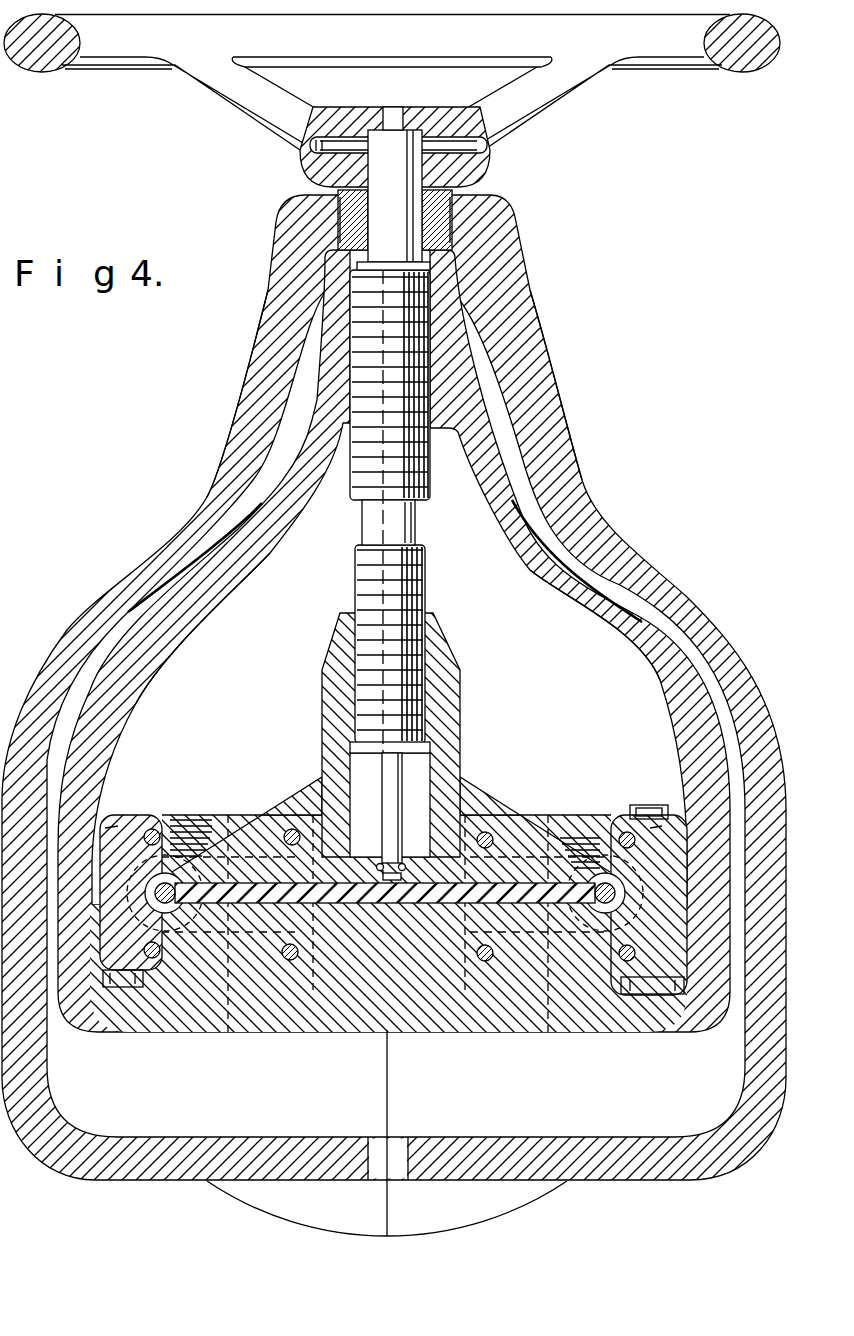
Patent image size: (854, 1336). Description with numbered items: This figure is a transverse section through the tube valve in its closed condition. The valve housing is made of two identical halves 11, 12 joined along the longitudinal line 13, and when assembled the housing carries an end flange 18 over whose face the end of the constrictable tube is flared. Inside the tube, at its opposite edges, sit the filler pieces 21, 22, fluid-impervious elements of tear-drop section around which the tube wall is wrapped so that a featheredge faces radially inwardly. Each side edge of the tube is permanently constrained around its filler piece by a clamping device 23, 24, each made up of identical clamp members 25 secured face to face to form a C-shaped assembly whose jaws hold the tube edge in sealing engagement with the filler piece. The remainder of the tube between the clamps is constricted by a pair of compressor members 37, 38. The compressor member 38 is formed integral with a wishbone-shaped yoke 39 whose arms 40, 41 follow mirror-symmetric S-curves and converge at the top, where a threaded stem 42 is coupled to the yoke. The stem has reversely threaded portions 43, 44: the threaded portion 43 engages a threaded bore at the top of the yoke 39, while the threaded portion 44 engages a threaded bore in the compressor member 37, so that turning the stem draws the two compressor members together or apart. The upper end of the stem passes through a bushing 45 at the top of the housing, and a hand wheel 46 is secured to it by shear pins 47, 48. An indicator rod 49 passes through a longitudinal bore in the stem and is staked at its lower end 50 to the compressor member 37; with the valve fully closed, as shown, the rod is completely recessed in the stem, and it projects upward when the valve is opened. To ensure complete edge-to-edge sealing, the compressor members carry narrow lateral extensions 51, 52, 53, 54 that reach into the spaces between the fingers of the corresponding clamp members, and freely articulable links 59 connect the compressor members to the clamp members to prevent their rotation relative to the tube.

The housing half 11 is at (545, 390).
The housing half 12 is at (228, 456).
The longitudinal line 13 is at (380, 1233).
The end flange 18 is at (268, 1214).
The filler piece 21 is at (168, 882).
The filler piece 22 is at (600, 882).
The clamping device 23 is at (130, 808).
The clamping device 24 is at (625, 812).
The clamp member 25 is at (105, 825).
The compressor member 37 is at (470, 805).
The compressor member 38 is at (376, 1000).
The yoke 39 is at (124, 715).
The yoke arm 40 is at (218, 614).
The yoke arm 41 is at (550, 608).
The threaded stem 42 is at (367, 535).
The threaded portion 43 is at (358, 470).
The threaded portion 44 is at (357, 580).
The bushing 45 is at (452, 213).
The hand wheel 46 is at (668, 70).
The shear pin 47 is at (492, 152).
The shear pin 48 is at (305, 151).
The indicator rod 49 is at (386, 800).
The lower end of rod 50 is at (378, 864).
The lateral extension 51 is at (205, 860).
The lateral extension 52 is at (556, 860).
The lateral extension 53 is at (195, 912).
The lateral extension 54 is at (590, 950).
The link 59 is at (234, 815).